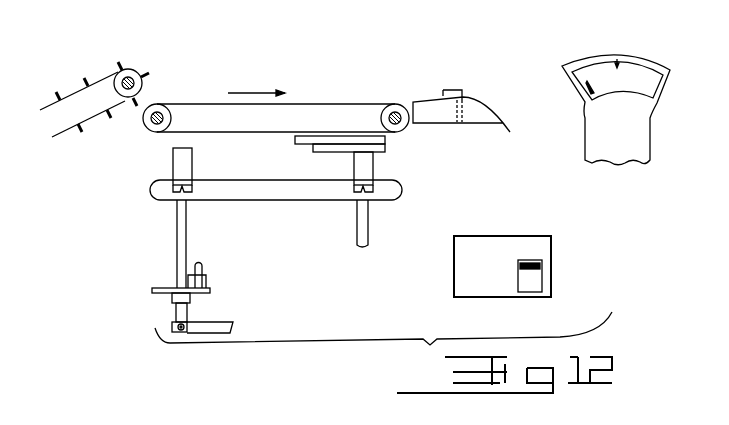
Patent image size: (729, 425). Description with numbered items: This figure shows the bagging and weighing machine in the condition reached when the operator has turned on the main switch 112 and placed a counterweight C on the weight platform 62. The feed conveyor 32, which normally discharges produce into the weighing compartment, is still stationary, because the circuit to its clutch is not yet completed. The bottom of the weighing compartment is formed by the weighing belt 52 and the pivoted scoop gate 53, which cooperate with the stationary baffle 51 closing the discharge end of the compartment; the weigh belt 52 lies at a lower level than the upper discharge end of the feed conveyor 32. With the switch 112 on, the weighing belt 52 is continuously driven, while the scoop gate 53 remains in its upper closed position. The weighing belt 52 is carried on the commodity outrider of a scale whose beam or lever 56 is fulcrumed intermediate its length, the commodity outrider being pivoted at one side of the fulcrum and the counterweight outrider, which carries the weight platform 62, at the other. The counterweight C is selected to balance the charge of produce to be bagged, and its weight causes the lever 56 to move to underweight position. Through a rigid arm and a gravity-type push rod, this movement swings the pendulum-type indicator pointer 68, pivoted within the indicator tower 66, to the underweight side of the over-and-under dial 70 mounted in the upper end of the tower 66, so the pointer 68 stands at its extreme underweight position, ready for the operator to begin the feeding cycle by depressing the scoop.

The feed conveyor 32 is at (50, 99).
The weighing belt 52 is at (358, 106).
The scoop gate 53 is at (438, 100).
The baffle 51 is at (455, 90).
The indicator tower 66 is at (594, 53).
The dial 70 is at (658, 72).
The indicator pointer 68 is at (587, 82).
The beam or lever 56 is at (152, 189).
The weight platform 62 is at (152, 288).
The counterweight C is at (208, 282).
The main switch 112 is at (537, 258).